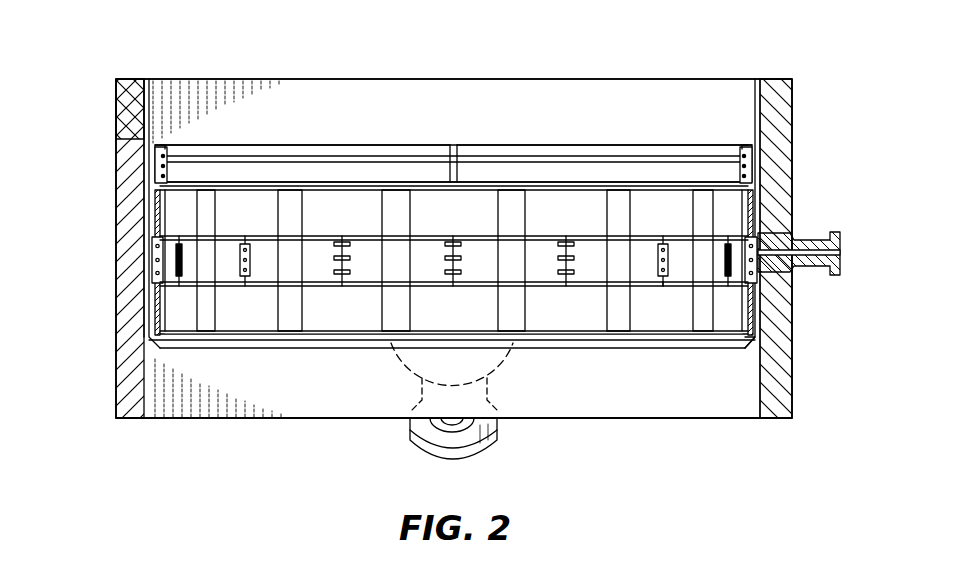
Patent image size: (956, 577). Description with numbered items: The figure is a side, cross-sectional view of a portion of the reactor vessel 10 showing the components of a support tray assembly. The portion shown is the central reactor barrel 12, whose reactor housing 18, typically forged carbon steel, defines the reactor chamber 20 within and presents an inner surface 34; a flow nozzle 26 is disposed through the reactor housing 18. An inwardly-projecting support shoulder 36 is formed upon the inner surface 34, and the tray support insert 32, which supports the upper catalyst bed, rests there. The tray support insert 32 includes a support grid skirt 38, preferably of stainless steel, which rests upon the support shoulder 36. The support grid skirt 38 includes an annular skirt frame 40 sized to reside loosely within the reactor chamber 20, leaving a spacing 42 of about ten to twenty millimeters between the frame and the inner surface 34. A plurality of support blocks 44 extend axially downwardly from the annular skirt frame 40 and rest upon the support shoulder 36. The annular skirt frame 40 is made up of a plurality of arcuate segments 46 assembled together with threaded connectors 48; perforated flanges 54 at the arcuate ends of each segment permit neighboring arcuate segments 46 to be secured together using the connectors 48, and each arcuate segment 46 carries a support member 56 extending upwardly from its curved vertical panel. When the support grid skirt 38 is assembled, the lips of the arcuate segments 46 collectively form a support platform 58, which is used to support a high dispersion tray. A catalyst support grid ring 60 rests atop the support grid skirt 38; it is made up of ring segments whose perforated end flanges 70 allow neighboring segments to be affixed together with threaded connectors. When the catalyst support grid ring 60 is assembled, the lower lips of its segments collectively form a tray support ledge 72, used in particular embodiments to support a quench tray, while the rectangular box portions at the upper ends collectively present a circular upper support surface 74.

The reactor vessel 10 is at (145, 50).
The central reactor barrel 12 is at (112, 207).
The reactor housing 18 is at (790, 128).
The reactor chamber 20 is at (156, 124).
The flow nozzle 26 is at (805, 238).
The tray support insert 32 is at (372, 143).
The inner surface 34 is at (757, 382).
The support shoulder 36 is at (750, 332).
The support grid skirt 38 is at (722, 211).
The annular skirt frame 40 is at (482, 234).
The spacing 42 is at (153, 266).
The support block 44 is at (163, 315).
The arcuate segment 46 is at (225, 252).
The threaded connector 48 is at (334, 272).
The perforated flange 54 is at (447, 266).
The support member 56 is at (165, 200).
The support platform 58 is at (676, 282).
The catalyst support grid ring 60 is at (282, 139).
The perforated end flange 70 is at (155, 150).
The tray support ledge 72 is at (314, 181).
The circular upper support surface 74 is at (584, 139).